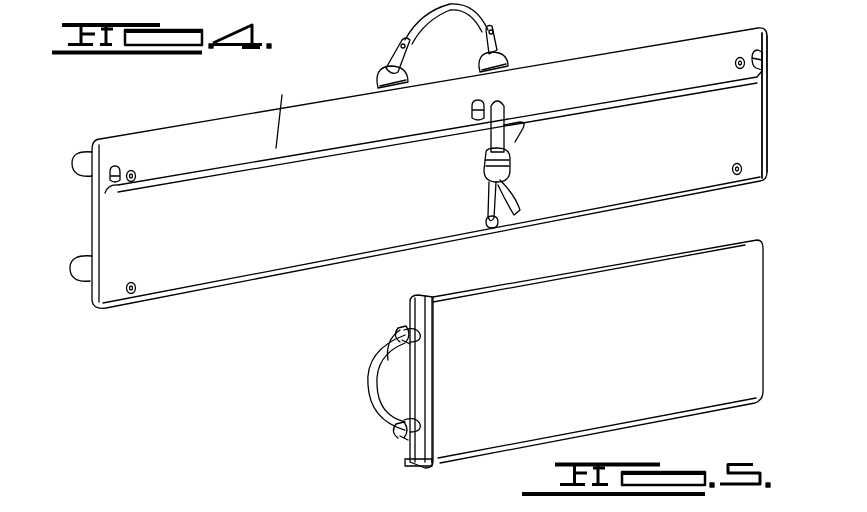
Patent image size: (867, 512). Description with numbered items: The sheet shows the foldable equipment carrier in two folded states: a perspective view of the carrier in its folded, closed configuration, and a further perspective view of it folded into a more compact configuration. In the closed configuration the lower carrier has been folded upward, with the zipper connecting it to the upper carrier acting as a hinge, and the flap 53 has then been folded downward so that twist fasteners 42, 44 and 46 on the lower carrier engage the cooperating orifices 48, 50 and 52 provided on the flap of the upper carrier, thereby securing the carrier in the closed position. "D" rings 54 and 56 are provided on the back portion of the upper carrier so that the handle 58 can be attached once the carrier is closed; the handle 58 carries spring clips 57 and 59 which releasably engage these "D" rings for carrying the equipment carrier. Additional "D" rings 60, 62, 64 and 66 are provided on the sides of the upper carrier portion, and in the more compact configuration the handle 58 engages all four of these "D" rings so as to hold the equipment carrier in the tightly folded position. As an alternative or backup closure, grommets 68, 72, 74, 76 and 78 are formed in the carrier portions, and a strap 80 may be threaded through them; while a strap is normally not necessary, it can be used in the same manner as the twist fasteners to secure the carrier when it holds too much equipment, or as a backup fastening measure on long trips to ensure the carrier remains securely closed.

In FIG. 4, the twist fastener 42 is at (122, 176).
In FIG. 4, the twist fastener 44 is at (478, 118).
In FIG. 4, the twist fastener 46 is at (768, 68).
In FIG. 5, the twist fastener 46 is at (586, 354).
In FIG. 4, the orifice 48 is at (117, 172).
In FIG. 4, the orifice 50 is at (470, 108).
In FIG. 4, the orifice 52 is at (763, 56).
In FIG. 4, the flap 53 is at (291, 109).
In FIG. 4, the "D" ring 54 is at (378, 76).
In FIG. 4, the "D" ring 56 is at (510, 60).
In FIG. 4, the spring clip 57 is at (500, 42).
In FIG. 5, the spring clip 57 is at (396, 334).
In FIG. 4, the handle 58 is at (455, 10).
In FIG. 5, the handle 58 is at (368, 394).
In FIG. 4, the spring clip 59 is at (395, 56).
In FIG. 5, the spring clip 59 is at (392, 440).
In FIG. 4, the "D" ring 60 is at (80, 155).
In FIG. 5, the "D" ring 60 is at (408, 330).
In FIG. 4, the "D" ring 62 is at (80, 280).
In FIG. 5, the "D" ring 62 is at (382, 426).
In FIG. 5, the "D" ring 64 is at (388, 362).
In FIG. 5, the "D" ring 66 is at (408, 455).
In FIG. 4, the grommet 68 is at (136, 174).
In FIG. 4, the grommet 72 is at (735, 63).
In FIG. 4, the grommet 74 is at (137, 292).
In FIG. 4, the grommet 76 is at (490, 230).
In FIG. 4, the grommet 78 is at (737, 175).
In FIG. 4, the strap 80 is at (504, 124).